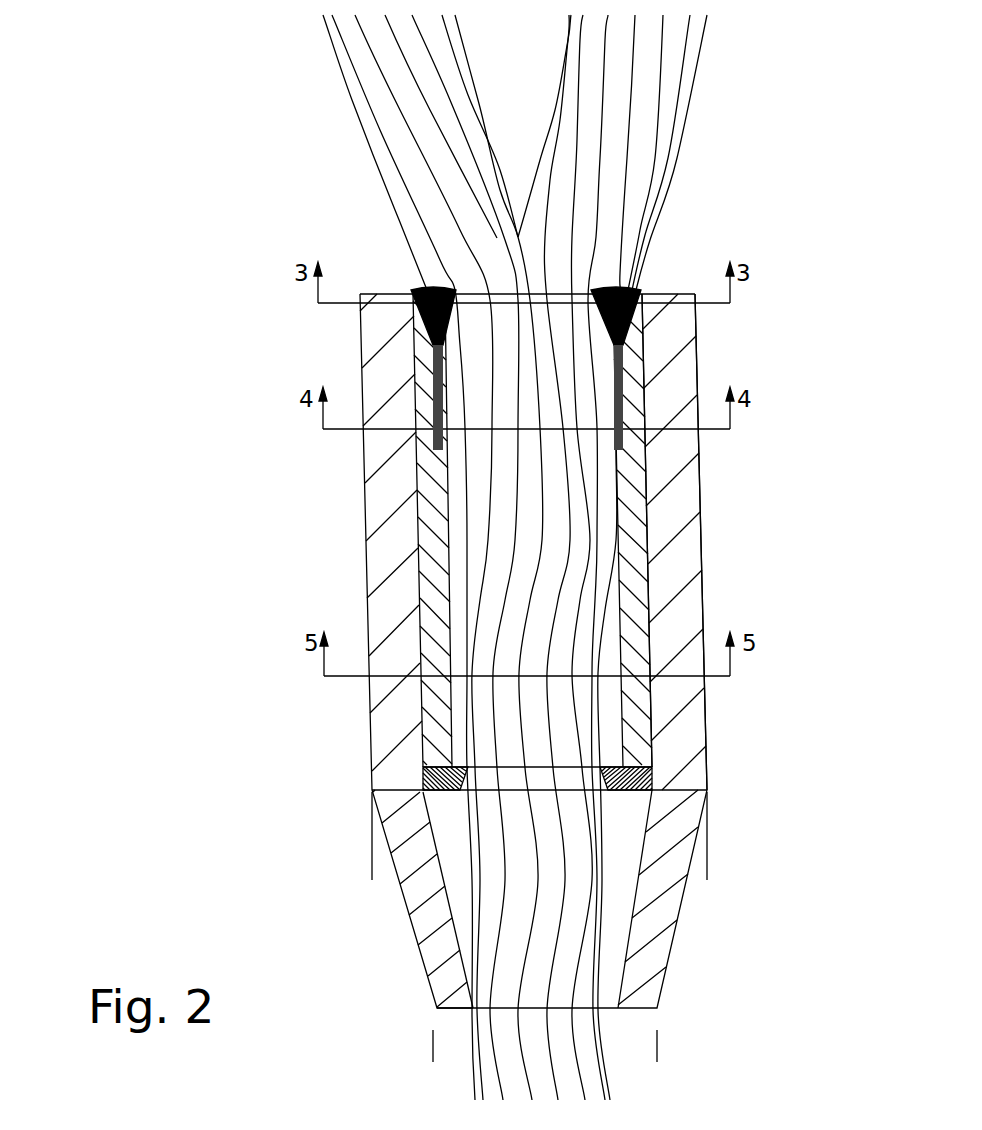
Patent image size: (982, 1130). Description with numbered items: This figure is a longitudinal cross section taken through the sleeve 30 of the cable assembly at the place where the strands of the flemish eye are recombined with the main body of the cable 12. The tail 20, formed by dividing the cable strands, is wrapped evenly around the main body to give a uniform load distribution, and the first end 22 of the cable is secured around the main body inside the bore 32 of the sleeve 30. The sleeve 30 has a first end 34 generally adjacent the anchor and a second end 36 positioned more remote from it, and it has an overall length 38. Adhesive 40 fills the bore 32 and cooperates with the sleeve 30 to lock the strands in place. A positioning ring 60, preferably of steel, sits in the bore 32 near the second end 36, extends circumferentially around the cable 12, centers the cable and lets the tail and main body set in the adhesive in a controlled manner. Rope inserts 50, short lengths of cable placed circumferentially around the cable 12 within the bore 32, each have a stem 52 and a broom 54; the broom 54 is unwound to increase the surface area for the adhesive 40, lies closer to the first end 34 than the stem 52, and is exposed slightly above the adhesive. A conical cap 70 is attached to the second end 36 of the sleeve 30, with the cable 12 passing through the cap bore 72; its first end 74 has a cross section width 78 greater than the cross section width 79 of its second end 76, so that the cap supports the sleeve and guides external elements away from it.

The cable 12 is at (348, 98).
The bore 32 is at (521, 210).
The first end 34 is at (378, 293).
The length 38 is at (210, 792).
The sleeve 30 is at (700, 338).
The tail 20 is at (445, 584).
The adhesive 40 is at (642, 584).
The broom 54 is at (432, 318).
The stem 52 is at (436, 375).
The rope insert 50 is at (620, 443).
The first end 22 is at (425, 762).
The positioning ring 60 is at (440, 780).
The second end 36 is at (370, 792).
The first end 74 is at (707, 790).
The cap 70 is at (398, 900).
The second end 76 is at (657, 1010).
The cap bore 72 is at (465, 1017).
The cross section width 78 is at (707, 867).
The cross section width 79 is at (657, 1047).